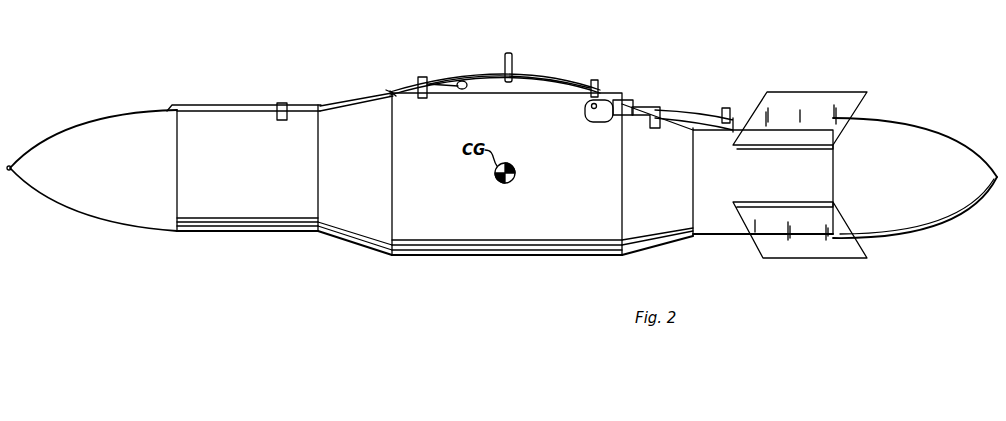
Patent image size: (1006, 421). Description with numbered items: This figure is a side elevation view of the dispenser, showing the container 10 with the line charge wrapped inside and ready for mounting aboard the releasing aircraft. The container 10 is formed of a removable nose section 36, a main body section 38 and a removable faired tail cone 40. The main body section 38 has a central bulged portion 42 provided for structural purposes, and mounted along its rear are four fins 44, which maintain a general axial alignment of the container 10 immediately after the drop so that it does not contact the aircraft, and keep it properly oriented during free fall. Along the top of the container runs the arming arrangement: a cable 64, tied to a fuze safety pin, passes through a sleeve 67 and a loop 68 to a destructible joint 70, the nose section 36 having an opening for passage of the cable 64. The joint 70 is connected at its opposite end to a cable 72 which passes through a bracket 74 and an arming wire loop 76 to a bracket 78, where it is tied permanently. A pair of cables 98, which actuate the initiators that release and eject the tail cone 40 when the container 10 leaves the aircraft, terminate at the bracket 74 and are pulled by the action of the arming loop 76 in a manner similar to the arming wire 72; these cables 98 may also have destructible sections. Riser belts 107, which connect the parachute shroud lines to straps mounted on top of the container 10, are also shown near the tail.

The container 10 is at (339, 62).
The nose section 36 is at (100, 214).
The main body section 38 is at (248, 214).
The tail cone 40 is at (937, 137).
The central bulged portion 42 is at (497, 237).
The fins 44 is at (818, 98).
The cable 64 is at (387, 92).
The sleeve 67 is at (220, 106).
The loop 68 is at (283, 103).
The destructible joint 70 is at (395, 92).
The cable 72 is at (407, 86).
The bracket 74 is at (428, 80).
The arming wire loop 76 is at (510, 55).
The bracket 78 is at (595, 80).
The cables 98 is at (468, 80).
The riser belts 107 is at (678, 120).